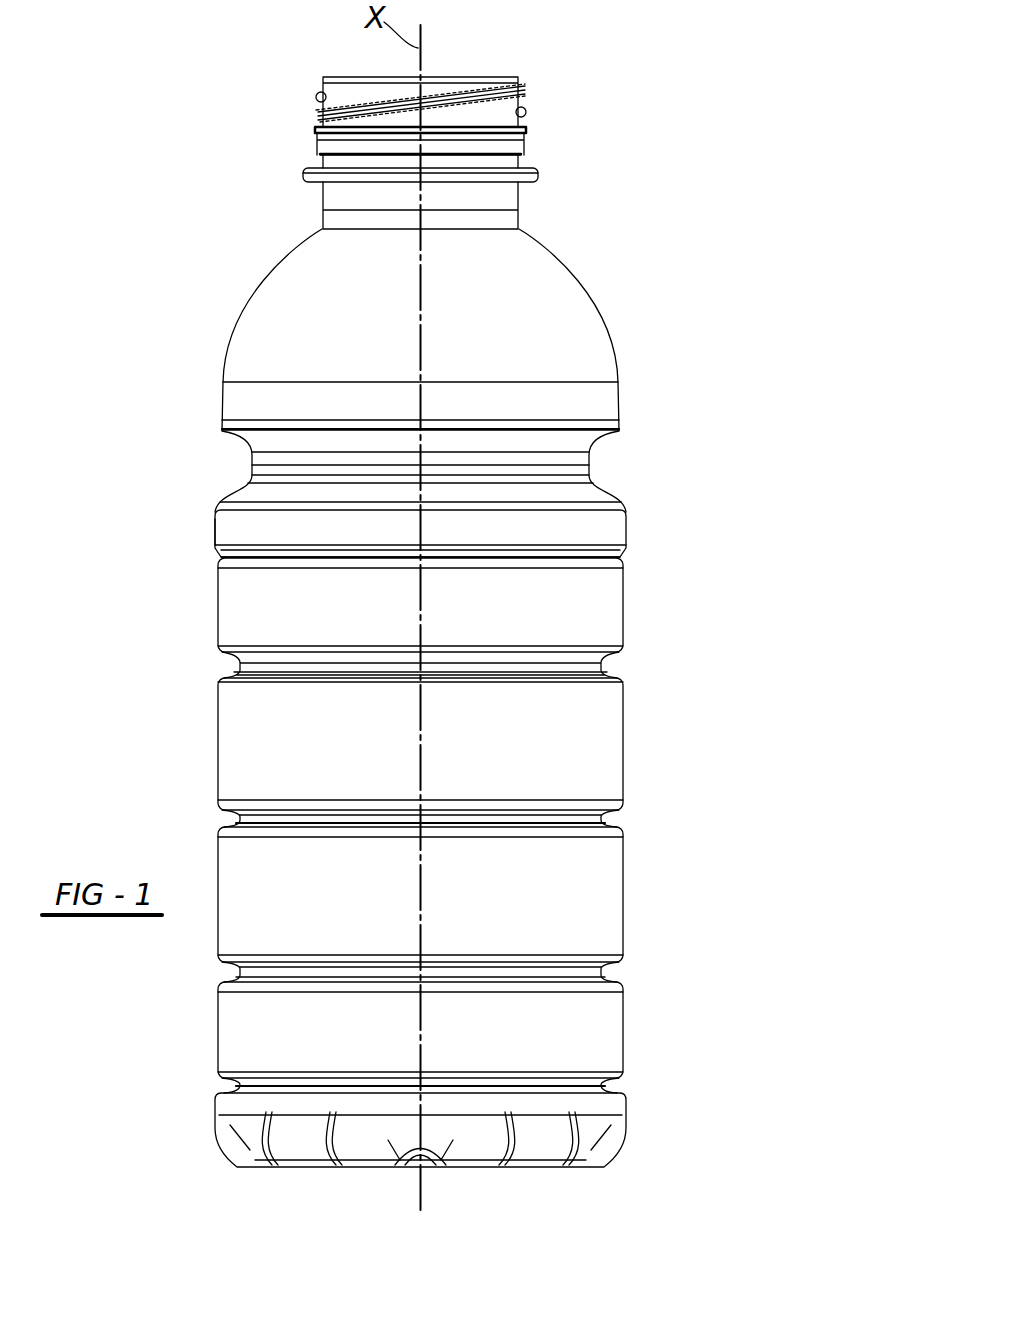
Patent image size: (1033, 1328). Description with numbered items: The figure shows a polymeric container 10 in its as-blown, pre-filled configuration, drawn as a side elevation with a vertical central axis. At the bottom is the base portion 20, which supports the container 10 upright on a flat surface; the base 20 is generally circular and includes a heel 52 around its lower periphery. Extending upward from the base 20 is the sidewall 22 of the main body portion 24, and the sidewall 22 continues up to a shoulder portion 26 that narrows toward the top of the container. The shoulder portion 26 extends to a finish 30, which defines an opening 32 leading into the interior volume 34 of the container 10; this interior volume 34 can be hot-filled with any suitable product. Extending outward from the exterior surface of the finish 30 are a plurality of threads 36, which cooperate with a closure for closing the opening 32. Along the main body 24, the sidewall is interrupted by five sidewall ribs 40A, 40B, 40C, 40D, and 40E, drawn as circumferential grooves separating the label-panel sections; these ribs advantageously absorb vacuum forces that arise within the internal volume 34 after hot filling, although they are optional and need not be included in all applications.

The container 10 is at (163, 105).
The base portion 20 is at (360, 1178).
The sidewall 22 is at (216, 718).
The main body portion 24 is at (180, 566).
The shoulder portion 26 is at (256, 290).
The finish 30 is at (538, 97).
The opening 32 is at (347, 74).
The interior volume 34 is at (562, 598).
The threads 36 is at (320, 113).
The sidewall rib 40A is at (612, 553).
The sidewall rib 40B is at (608, 658).
The sidewall rib 40C is at (605, 816).
The sidewall rib 40D is at (602, 970).
The sidewall rib 40E is at (603, 1080).
The heel 52 is at (617, 1153).